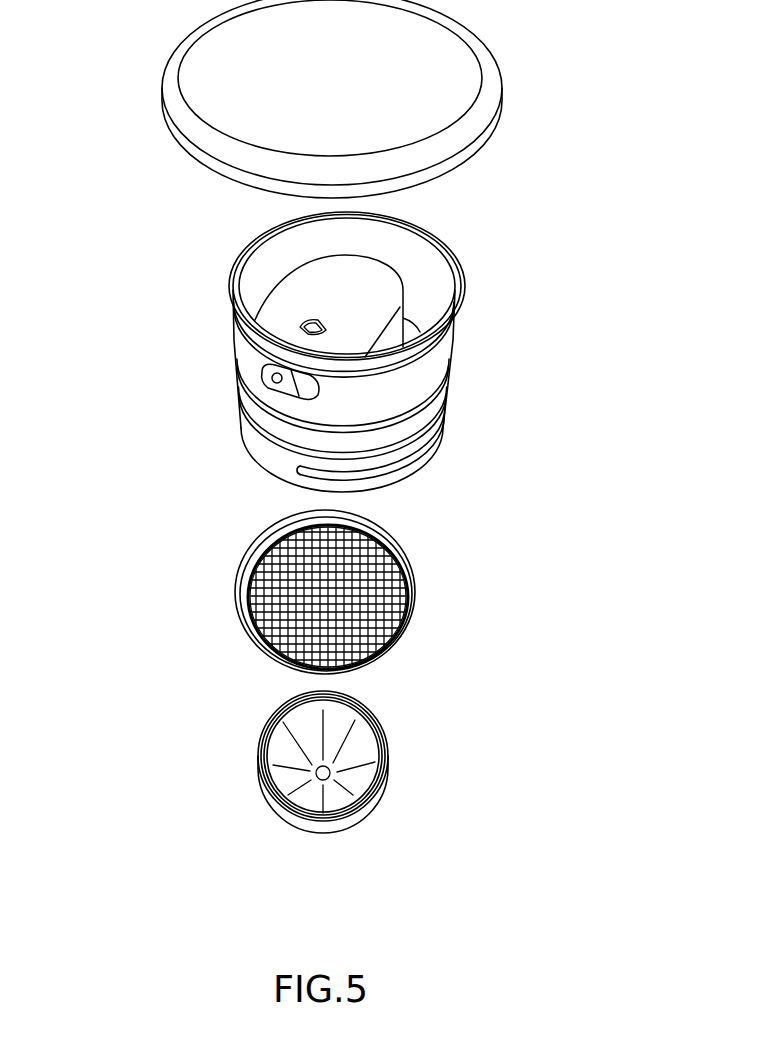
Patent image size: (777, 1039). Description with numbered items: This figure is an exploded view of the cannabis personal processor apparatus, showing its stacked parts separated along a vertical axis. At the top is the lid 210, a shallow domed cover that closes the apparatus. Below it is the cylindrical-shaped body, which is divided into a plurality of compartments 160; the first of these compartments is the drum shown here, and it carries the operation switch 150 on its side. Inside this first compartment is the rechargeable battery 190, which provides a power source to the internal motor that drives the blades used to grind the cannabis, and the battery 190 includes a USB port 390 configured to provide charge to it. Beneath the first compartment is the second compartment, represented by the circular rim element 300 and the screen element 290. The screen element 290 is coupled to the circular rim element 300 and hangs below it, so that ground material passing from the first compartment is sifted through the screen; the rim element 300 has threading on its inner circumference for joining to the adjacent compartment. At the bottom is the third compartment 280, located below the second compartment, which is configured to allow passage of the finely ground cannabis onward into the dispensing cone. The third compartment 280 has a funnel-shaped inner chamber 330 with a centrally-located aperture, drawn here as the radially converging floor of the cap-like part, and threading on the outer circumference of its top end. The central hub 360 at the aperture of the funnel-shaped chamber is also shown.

The lid 210 is at (482, 110).
The plurality of compartments 160 is at (453, 347).
The rechargeable battery 190 is at (302, 293).
The USB port 390 is at (300, 324).
The operation switch 150 is at (300, 382).
The circular rim element 300 is at (417, 587).
The screen element 290 is at (255, 607).
The third compartment 280 is at (373, 803).
The funnel-shaped inner chamber 330 is at (293, 725).
The hub 360 is at (337, 772).